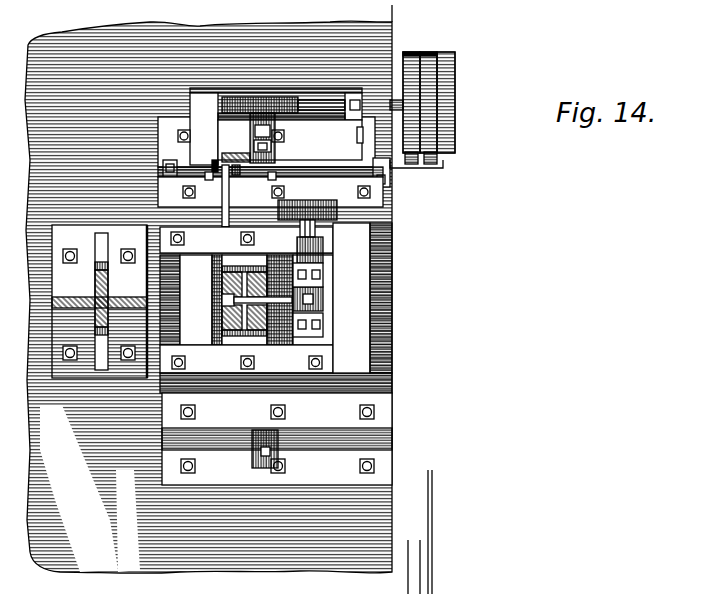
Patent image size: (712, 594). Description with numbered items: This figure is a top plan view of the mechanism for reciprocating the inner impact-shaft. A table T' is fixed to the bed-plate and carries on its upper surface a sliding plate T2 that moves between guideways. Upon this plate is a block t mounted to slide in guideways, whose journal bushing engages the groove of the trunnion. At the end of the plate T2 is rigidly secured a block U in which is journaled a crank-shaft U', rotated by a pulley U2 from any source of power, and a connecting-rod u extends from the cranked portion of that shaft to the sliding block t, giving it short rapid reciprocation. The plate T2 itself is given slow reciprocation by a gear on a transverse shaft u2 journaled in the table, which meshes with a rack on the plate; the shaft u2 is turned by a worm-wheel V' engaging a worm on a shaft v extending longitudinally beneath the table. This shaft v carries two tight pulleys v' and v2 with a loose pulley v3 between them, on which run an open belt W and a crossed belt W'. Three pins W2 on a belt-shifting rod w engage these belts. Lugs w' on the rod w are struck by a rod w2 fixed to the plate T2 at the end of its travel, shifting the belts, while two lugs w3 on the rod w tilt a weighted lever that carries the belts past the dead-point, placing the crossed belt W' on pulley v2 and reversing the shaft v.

The worm-wheel V' is at (276, 110).
The shaft v is at (321, 95).
The transverse shaft u2 is at (256, 135).
The belt-shifting rod w is at (270, 154).
The lugs w3 is at (214, 163).
The lugs w' is at (252, 187).
The rod w2 is at (229, 199).
The pulley U2 is at (314, 204).
The crank-shaft U' is at (307, 268).
The block U is at (322, 300).
The table T' is at (292, 354).
The sliding plate T2 is at (173, 333).
The block t is at (228, 316).
The connecting-rod u is at (285, 306).
The pins W2 is at (455, 127).
The open belt W is at (409, 183).
The crossed belt W' is at (440, 182).
The tight pulley v' is at (436, 92).
The loose pulley v3 is at (438, 80).
The tight pulley v2 is at (452, 96).